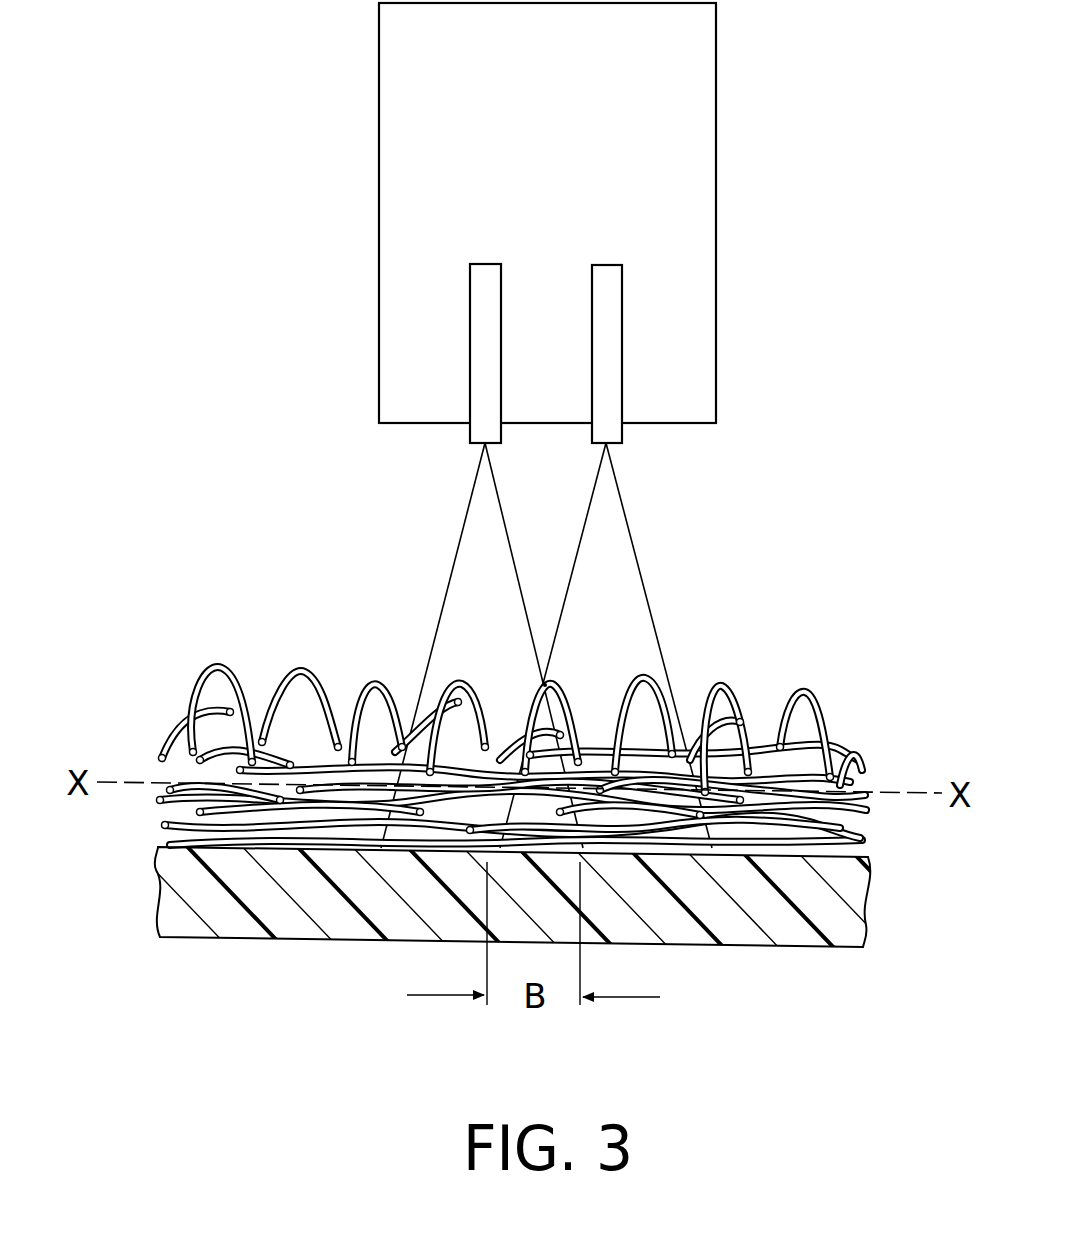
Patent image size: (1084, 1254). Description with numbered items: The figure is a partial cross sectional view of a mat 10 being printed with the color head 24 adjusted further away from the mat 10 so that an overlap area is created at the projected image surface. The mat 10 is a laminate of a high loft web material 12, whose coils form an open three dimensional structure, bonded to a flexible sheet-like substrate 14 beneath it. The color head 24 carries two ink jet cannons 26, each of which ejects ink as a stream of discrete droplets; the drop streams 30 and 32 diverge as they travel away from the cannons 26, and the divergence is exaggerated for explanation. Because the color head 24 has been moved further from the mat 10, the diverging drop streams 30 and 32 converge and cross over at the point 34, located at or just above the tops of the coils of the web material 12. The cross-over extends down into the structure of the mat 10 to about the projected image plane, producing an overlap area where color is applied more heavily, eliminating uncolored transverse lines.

The mat 10 is at (192, 628).
The high loft web material 12 is at (168, 737).
The flexible sheet-like substrate 14 is at (238, 925).
The color head 24 is at (718, 78).
The cannon 26 is at (592, 297).
The drop stream 30 is at (460, 528).
The drop stream 32 is at (628, 522).
The convergence point 34 is at (547, 682).